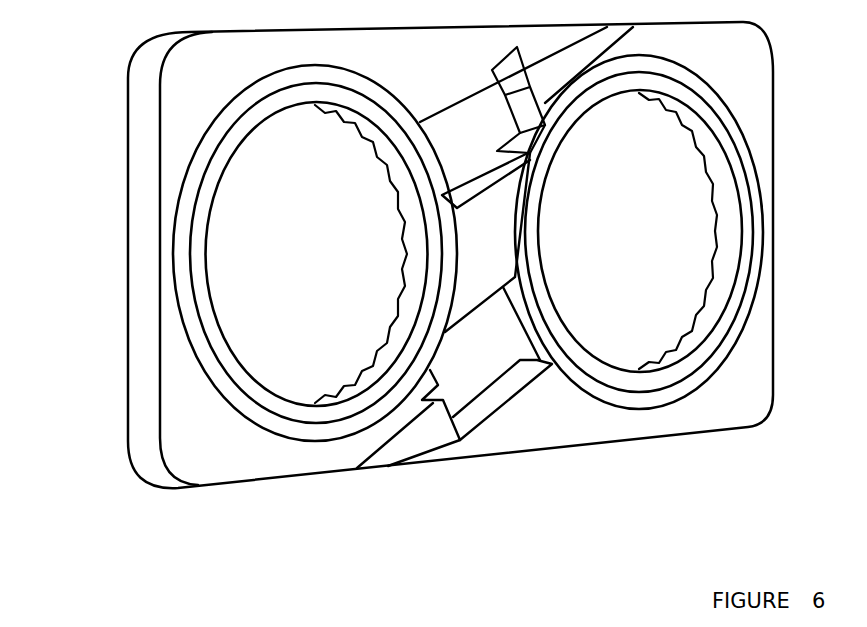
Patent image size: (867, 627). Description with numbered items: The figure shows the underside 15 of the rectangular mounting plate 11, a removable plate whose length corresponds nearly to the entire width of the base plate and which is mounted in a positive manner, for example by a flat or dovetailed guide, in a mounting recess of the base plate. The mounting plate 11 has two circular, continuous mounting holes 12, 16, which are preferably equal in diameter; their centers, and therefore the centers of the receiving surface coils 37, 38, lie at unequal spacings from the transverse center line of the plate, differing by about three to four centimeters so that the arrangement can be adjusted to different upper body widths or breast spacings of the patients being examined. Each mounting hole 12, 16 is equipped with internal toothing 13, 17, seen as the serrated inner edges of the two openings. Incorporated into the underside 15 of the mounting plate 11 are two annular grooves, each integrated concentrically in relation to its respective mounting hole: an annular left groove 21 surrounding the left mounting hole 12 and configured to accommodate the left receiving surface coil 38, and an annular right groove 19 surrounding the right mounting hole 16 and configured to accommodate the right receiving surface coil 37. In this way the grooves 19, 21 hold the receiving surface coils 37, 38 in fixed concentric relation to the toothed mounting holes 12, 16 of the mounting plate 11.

The mounting plate 11 is at (206, 455).
The mounting hole 12 is at (240, 243).
The internal toothing 13 is at (350, 390).
The underside 15 is at (528, 425).
The mounting hole 16 is at (655, 330).
The internal toothing 17 is at (736, 270).
The annular right groove 19 is at (693, 77).
The annular left groove 21 is at (190, 330).
The right receiving surface coil 37 is at (755, 245).
The left receiving surface coil 38 is at (242, 100).